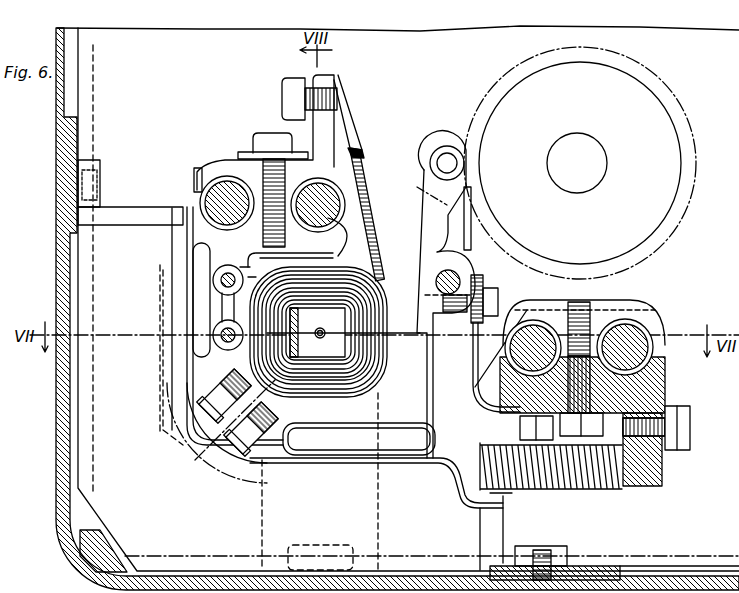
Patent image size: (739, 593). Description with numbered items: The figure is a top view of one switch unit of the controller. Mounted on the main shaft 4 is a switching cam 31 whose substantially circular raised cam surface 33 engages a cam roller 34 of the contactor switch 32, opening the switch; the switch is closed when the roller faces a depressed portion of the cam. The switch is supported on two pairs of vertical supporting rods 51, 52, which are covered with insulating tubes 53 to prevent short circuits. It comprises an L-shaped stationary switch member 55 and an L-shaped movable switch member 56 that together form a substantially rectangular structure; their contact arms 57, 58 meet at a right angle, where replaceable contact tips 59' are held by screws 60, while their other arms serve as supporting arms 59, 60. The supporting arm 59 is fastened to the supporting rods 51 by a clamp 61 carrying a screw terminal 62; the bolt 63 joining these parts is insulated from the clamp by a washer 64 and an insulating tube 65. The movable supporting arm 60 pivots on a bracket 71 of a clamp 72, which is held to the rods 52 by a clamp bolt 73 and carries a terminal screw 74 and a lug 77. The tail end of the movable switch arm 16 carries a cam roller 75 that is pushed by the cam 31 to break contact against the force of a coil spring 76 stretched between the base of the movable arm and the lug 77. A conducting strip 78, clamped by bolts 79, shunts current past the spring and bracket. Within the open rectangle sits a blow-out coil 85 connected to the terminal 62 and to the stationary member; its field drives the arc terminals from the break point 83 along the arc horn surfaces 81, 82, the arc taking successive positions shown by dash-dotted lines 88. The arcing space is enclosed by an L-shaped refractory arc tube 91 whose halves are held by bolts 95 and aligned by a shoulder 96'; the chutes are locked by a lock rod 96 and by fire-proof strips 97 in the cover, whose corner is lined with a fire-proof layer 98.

The main shaft 4 is at (582, 140).
The movable switch arm 16 is at (418, 244).
The switching cam 31 is at (658, 122).
The contactor switch 32 is at (404, 226).
The cam surface 33 is at (634, 62).
The cam roller 34 is at (447, 150).
The supporting rod 51 is at (205, 180).
The supporting rod 52 is at (629, 325).
The insulating tube 53 is at (665, 340).
The stationary switch member 55 is at (187, 240).
The movable switch member 56 is at (387, 402).
The contact arm 57 is at (200, 388).
The contact arm 58 is at (343, 452).
The supporting arm 59 is at (282, 224).
The contact tip 59' is at (204, 428).
The supporting arm 60 is at (430, 333).
The clamp 61 is at (232, 160).
The screw terminal 62 is at (310, 82).
The bolt 63 is at (268, 140).
The washer 64 is at (303, 154).
The insulating tube 65 is at (262, 203).
The bracket 71 is at (492, 325).
The clamp 72 is at (661, 386).
The clamp bolt 73 is at (577, 302).
The terminal screw 74 is at (690, 421).
The cam roller 75 is at (438, 148).
The coil spring 76 is at (590, 484).
The lug 77 is at (646, 472).
The conducting strip 78 is at (521, 320).
The bolt 79 is at (493, 287).
The arc horn surface 81 is at (187, 309).
The arc horn surface 82 is at (390, 466).
The break point 83 is at (251, 266).
The blow-out coil 85 is at (352, 127).
The arc positions 88 is at (242, 490).
The arc tube 91 is at (88, 428).
The bolt 95 is at (72, 372).
The lock rod 96 is at (116, 539).
The shoulder 96' is at (320, 531).
The strip 97 is at (62, 222).
The layer 98 is at (418, 575).